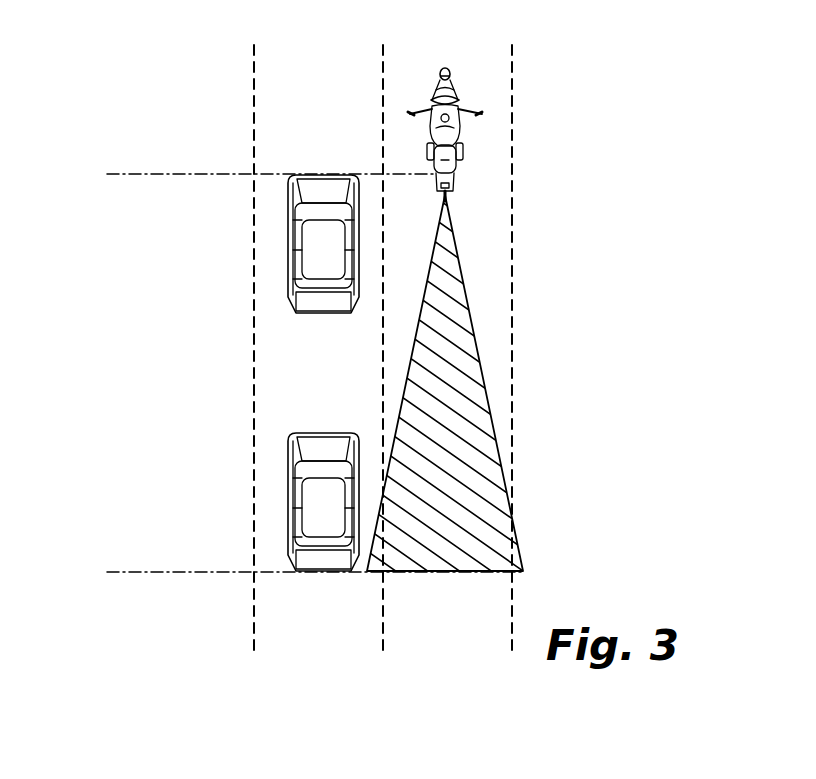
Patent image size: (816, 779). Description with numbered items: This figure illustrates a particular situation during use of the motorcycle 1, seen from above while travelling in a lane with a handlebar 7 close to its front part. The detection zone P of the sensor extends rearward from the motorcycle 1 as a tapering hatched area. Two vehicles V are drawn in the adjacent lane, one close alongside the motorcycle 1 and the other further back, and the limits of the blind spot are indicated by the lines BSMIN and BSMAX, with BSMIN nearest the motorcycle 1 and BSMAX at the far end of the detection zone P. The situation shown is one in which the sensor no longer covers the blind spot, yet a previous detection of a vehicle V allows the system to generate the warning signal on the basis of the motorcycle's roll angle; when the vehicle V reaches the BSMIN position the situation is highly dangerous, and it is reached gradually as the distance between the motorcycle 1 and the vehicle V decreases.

The motorcycle 1 is at (480, 136).
The handlebar 7 is at (465, 77).
The vehicle V is at (279, 244).
The detection zone P is at (483, 333).
The blind spot minimum limit BSMIN is at (256, 152).
The blind spot maximum limit BSMAX is at (304, 552).